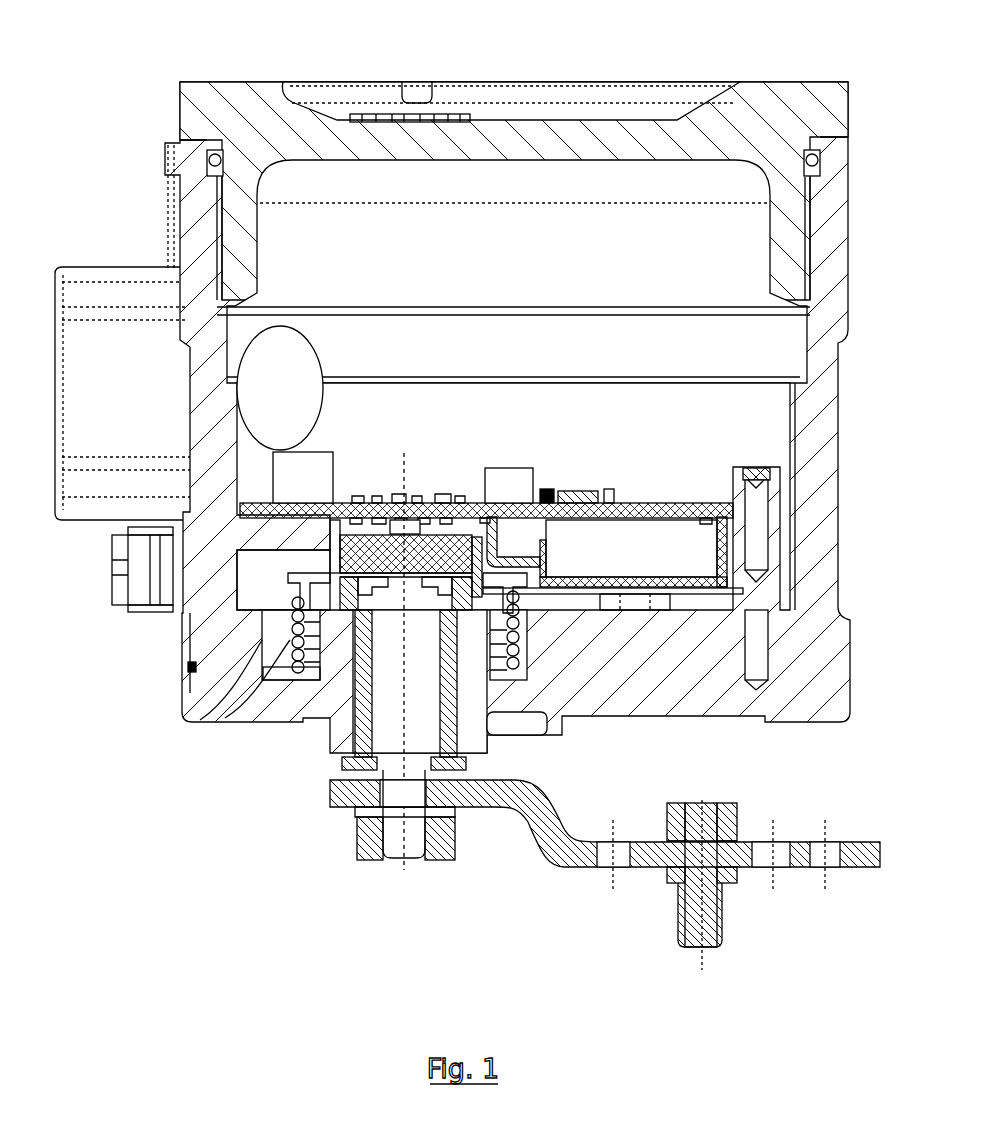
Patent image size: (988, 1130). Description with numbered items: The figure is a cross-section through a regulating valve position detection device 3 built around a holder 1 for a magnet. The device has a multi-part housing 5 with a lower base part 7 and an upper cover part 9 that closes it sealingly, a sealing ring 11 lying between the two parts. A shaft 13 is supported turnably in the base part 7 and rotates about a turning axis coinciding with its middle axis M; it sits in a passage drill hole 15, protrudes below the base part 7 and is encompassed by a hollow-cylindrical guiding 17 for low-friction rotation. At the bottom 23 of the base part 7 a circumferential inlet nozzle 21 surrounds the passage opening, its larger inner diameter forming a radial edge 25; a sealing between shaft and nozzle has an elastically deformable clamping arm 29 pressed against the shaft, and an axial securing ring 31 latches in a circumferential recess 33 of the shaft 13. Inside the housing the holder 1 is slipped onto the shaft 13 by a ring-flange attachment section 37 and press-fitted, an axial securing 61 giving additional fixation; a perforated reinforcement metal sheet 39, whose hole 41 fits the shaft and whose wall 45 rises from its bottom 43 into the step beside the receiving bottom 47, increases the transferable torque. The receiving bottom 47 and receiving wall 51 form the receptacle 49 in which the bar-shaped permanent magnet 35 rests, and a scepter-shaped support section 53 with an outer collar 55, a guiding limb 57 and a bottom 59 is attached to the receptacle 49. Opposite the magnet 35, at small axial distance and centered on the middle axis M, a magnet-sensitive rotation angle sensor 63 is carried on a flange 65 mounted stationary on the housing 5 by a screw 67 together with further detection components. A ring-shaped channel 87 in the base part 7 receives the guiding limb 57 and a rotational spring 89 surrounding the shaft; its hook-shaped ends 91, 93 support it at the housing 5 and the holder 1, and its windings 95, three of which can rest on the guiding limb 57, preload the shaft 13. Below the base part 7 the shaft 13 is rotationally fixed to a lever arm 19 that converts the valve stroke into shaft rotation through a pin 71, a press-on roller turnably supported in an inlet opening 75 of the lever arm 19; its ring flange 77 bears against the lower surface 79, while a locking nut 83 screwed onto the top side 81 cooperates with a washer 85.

The holder 1 is at (262, 580).
The regulating valve position detection device 3 is at (222, 787).
The housing 5 is at (176, 710).
The base part 7 is at (822, 665).
The cover part 9 is at (770, 108).
The sealing ring 11 is at (210, 120).
The shaft 13 is at (393, 860).
The passage drill hole 15 is at (352, 733).
The guiding 17 is at (338, 762).
The lever arm 19 is at (550, 812).
The inlet nozzle 21 is at (345, 740).
The bottom 23 is at (720, 724).
The radial edge 25 is at (470, 733).
The clamping arm 29 is at (380, 673).
The axial securing ring 31 is at (385, 775).
The circumferential recess 33 is at (358, 822).
The magnet 35 is at (462, 575).
The attachment section 37 is at (390, 595).
The reinforcement metal sheet 39 is at (272, 700).
The hole 41 is at (415, 555).
The bottom 43 is at (507, 537).
The wall 45 is at (520, 560).
The receiving bottom 47 is at (363, 560).
The receptacle 49 is at (318, 547).
The receiving wall 51 is at (307, 567).
The support section 53 is at (300, 540).
The outer collar 55 is at (295, 570).
The guiding limb 57 is at (330, 596).
The bottom 59 is at (272, 636).
The axial securing 61 is at (377, 567).
The magnet-sensitive rotation angle sensor 63 is at (410, 520).
The flange 65 is at (675, 502).
The screw 67 is at (748, 476).
The pin 71 is at (705, 950).
The inlet opening 75 is at (602, 870).
The ring flange 77 is at (740, 872).
The lower surface 79 is at (862, 870).
The top side 81 is at (860, 842).
The locking nut 83 is at (728, 806).
The washer 85 is at (740, 838).
The ring-shaped channel 87 is at (193, 668).
The rotational spring 89 is at (527, 627).
The rotational spring end 91 is at (262, 690).
The rotational spring end 93 is at (537, 567).
The rotational spring winding 95 is at (530, 665).
The middle axis M is at (407, 470).